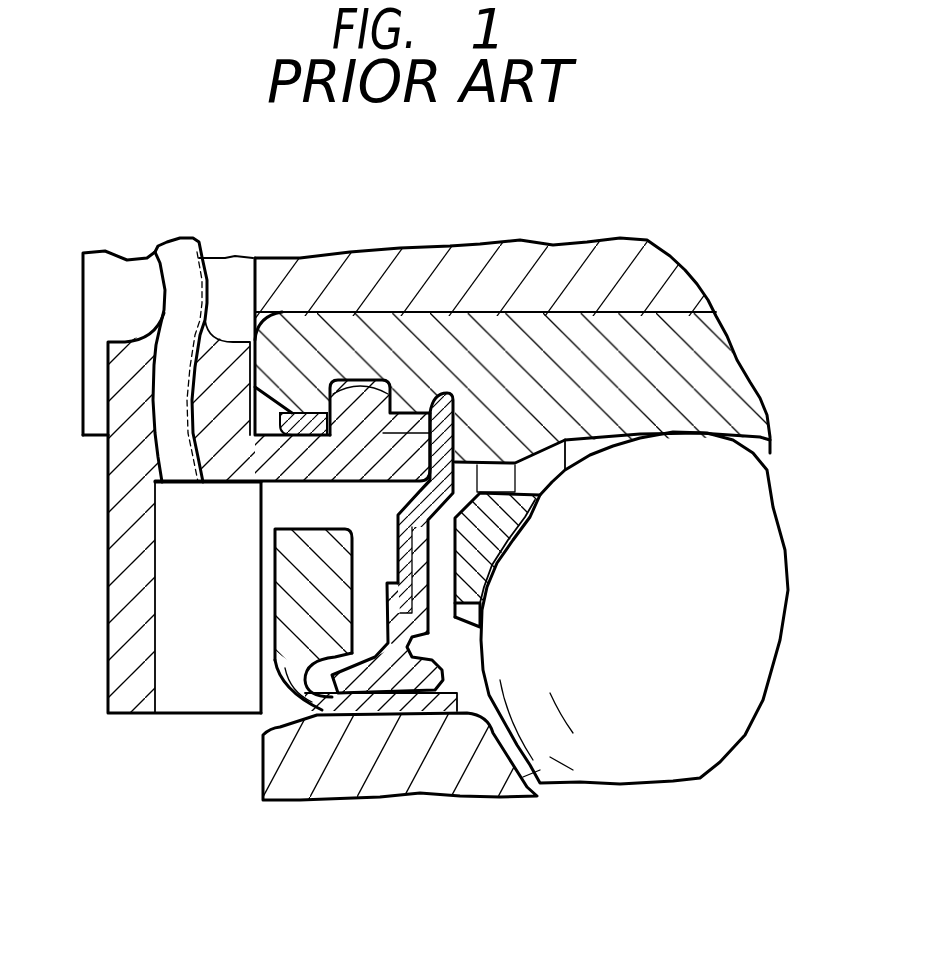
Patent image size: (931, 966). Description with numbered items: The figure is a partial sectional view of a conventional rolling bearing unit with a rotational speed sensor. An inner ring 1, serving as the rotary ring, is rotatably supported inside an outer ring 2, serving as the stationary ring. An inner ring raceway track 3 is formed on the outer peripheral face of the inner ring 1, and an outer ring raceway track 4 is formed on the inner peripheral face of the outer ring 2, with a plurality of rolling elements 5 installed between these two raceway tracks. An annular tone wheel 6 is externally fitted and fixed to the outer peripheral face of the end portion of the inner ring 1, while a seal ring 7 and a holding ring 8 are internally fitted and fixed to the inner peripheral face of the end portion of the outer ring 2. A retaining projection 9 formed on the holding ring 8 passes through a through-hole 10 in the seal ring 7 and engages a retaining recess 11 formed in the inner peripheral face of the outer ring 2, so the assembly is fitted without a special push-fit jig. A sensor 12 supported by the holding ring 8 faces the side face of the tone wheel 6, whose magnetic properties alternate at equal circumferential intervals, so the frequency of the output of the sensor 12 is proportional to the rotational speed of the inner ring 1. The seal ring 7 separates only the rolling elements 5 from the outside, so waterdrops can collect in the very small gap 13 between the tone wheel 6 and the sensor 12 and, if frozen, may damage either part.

The inner ring 1 is at (300, 780).
The outer ring 2 is at (650, 323).
The inner ring raceway track 3 is at (533, 768).
The outer ring raceway track 4 is at (725, 438).
The rolling elements 5 is at (758, 563).
The tone wheel 6 is at (292, 652).
The seal ring 7 is at (407, 572).
The holding ring 8 is at (125, 633).
The retaining projection 9 is at (360, 403).
The through-hole 10 is at (340, 382).
The retaining recess 11 is at (440, 397).
The sensor 12 is at (167, 683).
The gap 13 is at (267, 583).